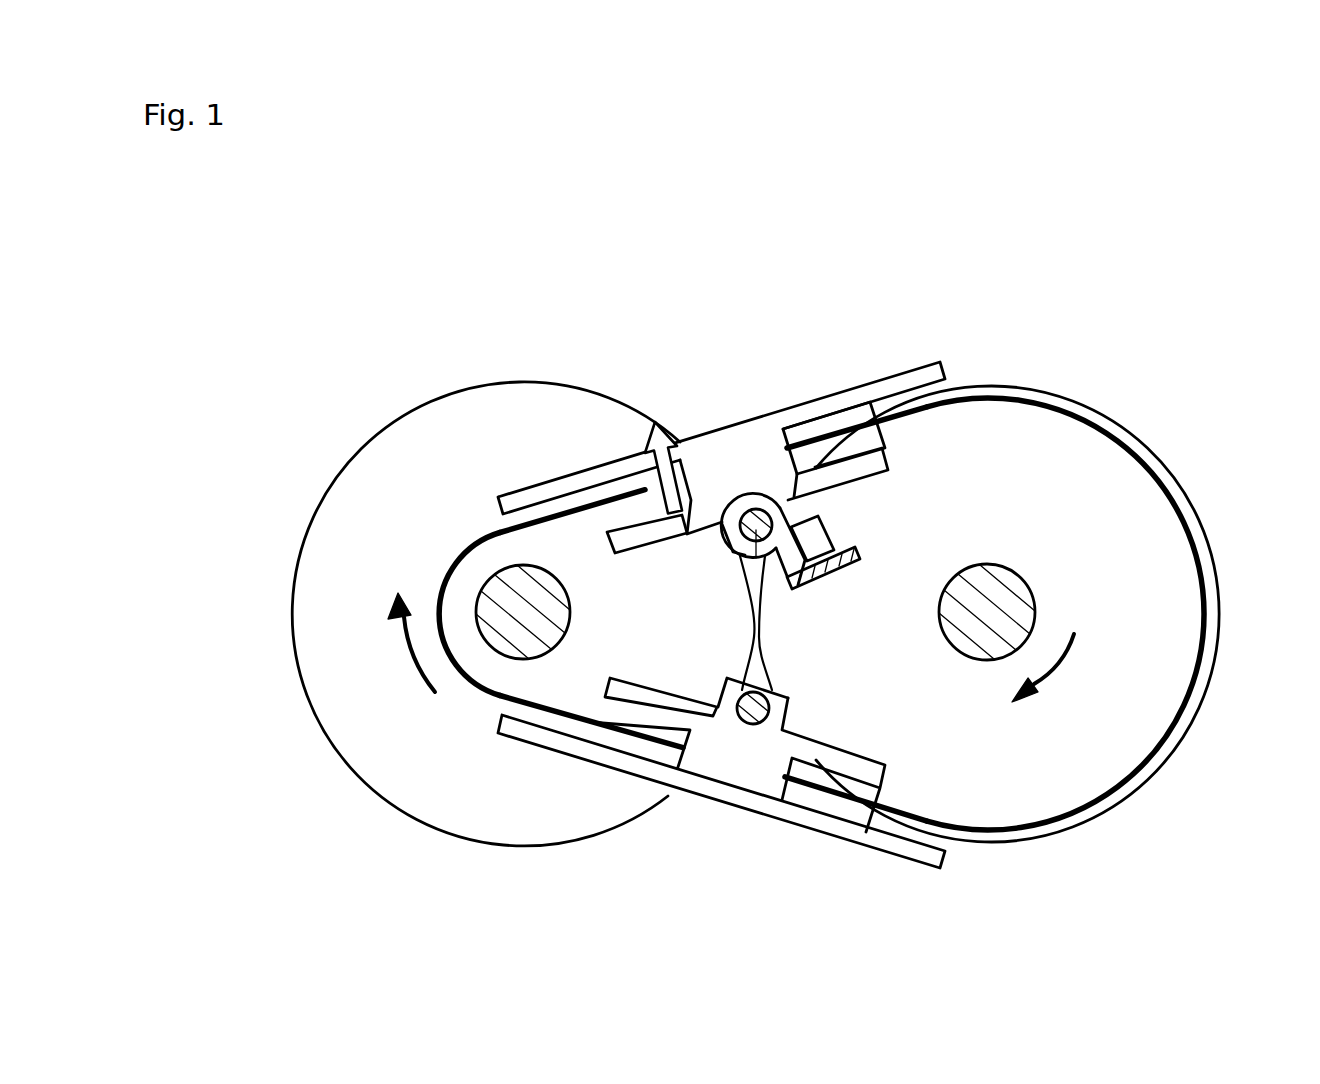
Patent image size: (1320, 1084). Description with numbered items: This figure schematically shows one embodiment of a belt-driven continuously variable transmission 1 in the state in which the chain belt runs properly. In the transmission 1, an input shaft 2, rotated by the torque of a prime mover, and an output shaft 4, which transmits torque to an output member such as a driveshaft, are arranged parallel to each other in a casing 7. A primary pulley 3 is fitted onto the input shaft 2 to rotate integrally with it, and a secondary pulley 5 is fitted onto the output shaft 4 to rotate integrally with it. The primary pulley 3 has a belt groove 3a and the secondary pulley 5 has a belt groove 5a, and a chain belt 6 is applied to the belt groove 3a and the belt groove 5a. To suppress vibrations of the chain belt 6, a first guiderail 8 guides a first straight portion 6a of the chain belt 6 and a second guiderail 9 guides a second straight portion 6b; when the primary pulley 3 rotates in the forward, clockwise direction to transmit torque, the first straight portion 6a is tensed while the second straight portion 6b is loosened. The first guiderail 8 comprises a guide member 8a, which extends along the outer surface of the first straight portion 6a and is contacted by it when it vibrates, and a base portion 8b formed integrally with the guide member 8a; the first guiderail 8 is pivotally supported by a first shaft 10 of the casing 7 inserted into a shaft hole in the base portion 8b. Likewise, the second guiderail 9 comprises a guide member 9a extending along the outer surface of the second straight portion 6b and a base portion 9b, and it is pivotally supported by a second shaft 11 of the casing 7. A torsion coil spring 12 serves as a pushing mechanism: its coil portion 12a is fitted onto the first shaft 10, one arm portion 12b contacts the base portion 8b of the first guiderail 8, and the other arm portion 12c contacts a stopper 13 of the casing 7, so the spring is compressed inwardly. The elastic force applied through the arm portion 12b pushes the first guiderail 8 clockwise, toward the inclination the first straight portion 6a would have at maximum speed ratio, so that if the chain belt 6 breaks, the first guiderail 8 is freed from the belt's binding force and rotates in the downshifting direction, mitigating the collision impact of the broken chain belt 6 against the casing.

The belt-driven continuously variable transmission 1 is at (992, 292).
The input shaft 2 is at (1020, 590).
The primary pulley 3 is at (1035, 618).
The belt groove 3a is at (1085, 785).
The output shaft 4 is at (558, 625).
The secondary pulley 5 is at (454, 614).
The belt groove 5a is at (350, 732).
The chain belt 6 is at (797, 618).
The first straight portion 6a is at (808, 440).
The second straight portion 6b is at (590, 720).
The casing 7 is at (840, 575).
The first guiderail 8 is at (721, 434).
The guide member 8a is at (720, 460).
The base portion 8b is at (793, 508).
The second guiderail 9 is at (721, 781).
The guide member 9a is at (725, 790).
The base portion 9b is at (720, 693).
The first shaft 10 is at (769, 556).
The second shaft 11 is at (776, 695).
The torsion coil spring 12 is at (731, 571).
The coil portion 12a is at (730, 550).
The arm portion 12b is at (680, 540).
The arm portion 12c is at (782, 570).
The stopper 13 is at (820, 535).